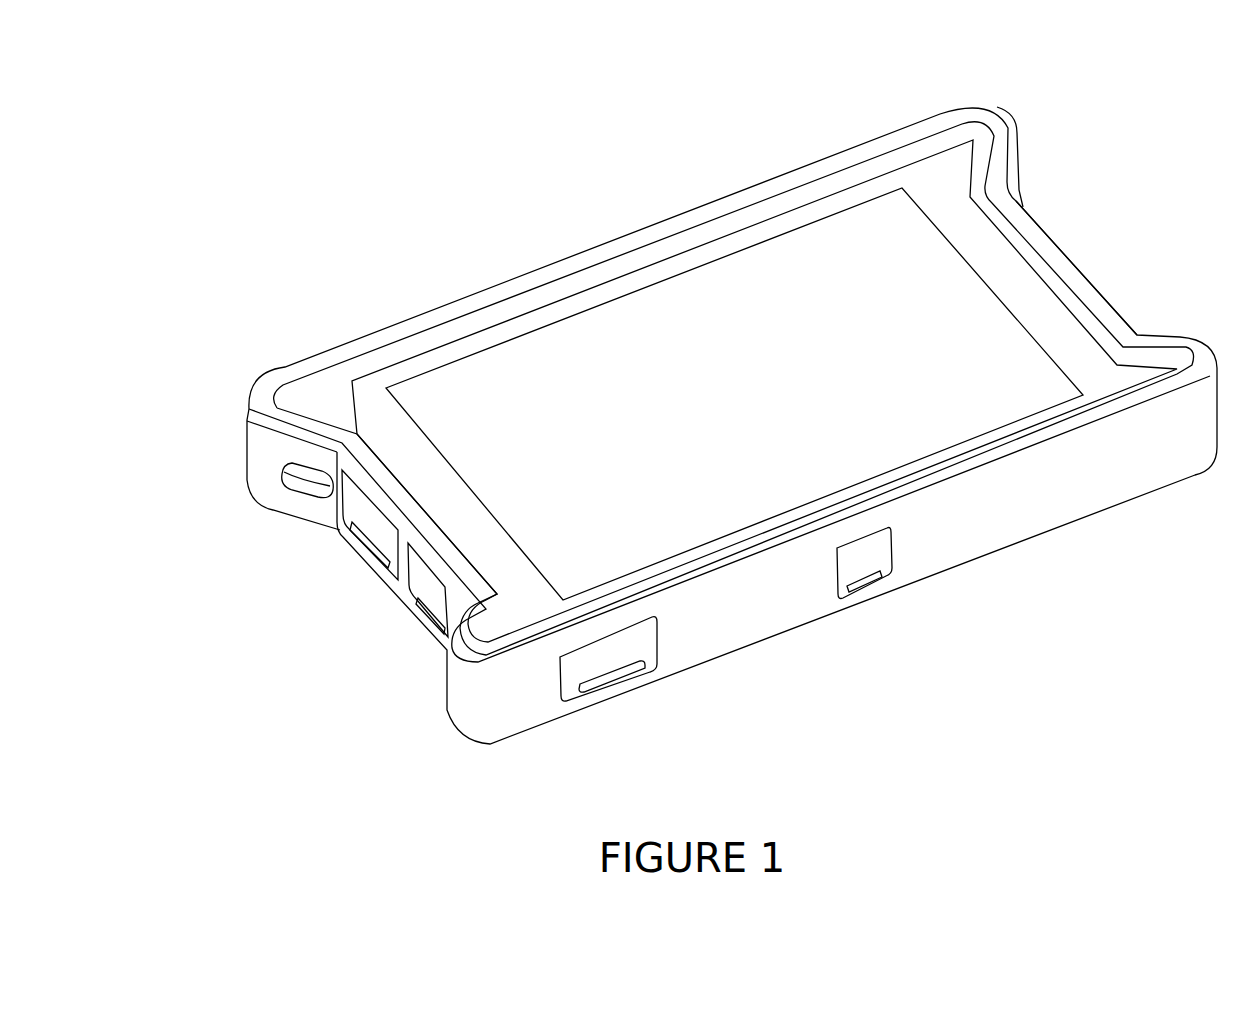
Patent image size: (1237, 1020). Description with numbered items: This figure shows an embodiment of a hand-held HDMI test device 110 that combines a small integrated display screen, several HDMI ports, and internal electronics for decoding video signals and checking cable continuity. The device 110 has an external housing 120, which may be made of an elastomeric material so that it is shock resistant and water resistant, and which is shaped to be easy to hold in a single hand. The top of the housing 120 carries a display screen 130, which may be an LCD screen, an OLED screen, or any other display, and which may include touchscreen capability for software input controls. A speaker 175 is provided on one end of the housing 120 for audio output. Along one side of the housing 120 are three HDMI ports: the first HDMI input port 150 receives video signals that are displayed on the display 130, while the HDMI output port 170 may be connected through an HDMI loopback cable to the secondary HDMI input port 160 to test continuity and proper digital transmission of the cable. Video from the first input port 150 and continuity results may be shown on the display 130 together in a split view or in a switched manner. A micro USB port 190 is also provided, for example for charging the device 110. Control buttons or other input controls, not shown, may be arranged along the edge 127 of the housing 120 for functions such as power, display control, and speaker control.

The device 110 is at (558, 172).
The external housing 120 is at (1075, 490).
The edge 127 is at (1070, 256).
The display screen 130 is at (597, 375).
The first HDMI input port 150 is at (605, 668).
The secondary HDMI input port 160 is at (420, 598).
The HDMI output port 170 is at (358, 545).
The speaker 175 is at (300, 487).
The micro USB port 190 is at (868, 570).